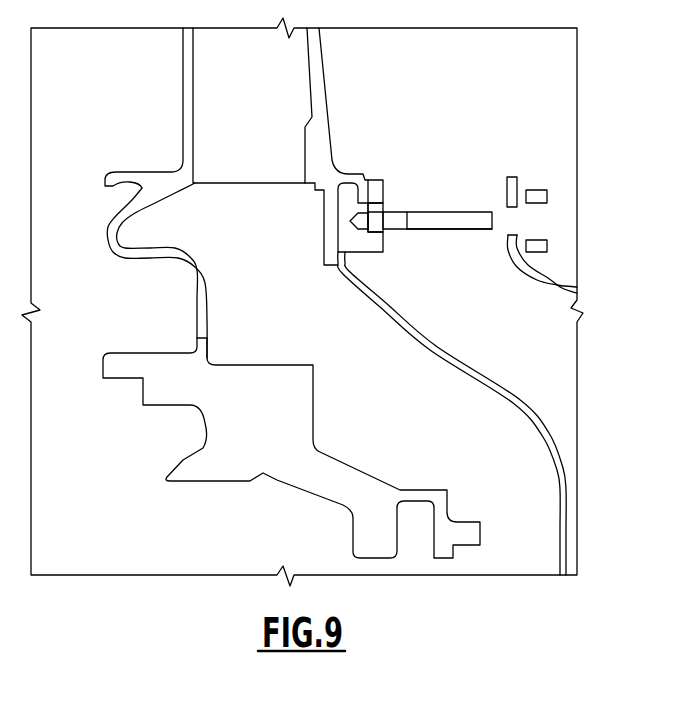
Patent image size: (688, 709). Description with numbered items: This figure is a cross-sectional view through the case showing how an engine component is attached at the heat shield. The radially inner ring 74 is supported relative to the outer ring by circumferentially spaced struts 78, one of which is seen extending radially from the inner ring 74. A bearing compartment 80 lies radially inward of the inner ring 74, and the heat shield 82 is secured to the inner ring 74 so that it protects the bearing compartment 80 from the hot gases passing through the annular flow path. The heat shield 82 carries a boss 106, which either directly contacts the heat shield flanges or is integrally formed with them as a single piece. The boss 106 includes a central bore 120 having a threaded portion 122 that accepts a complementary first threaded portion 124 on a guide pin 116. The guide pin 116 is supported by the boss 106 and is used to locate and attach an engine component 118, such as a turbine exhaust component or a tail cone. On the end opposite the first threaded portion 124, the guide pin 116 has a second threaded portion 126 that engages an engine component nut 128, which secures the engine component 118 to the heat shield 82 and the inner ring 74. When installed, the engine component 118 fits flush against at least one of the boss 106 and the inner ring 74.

The radially inner ring 74 is at (160, 178).
The struts 78 is at (323, 82).
The bearing compartment 80 is at (370, 427).
The heat shield 82 is at (445, 357).
The boss 106 is at (370, 247).
The guide pin 116 is at (462, 222).
The engine component 118 is at (550, 277).
The central bore 120 is at (362, 217).
The threaded portion 122 is at (378, 207).
The first threaded portion 124 is at (381, 223).
The second threaded portion 126 is at (447, 233).
The engine component nut 128 is at (537, 190).